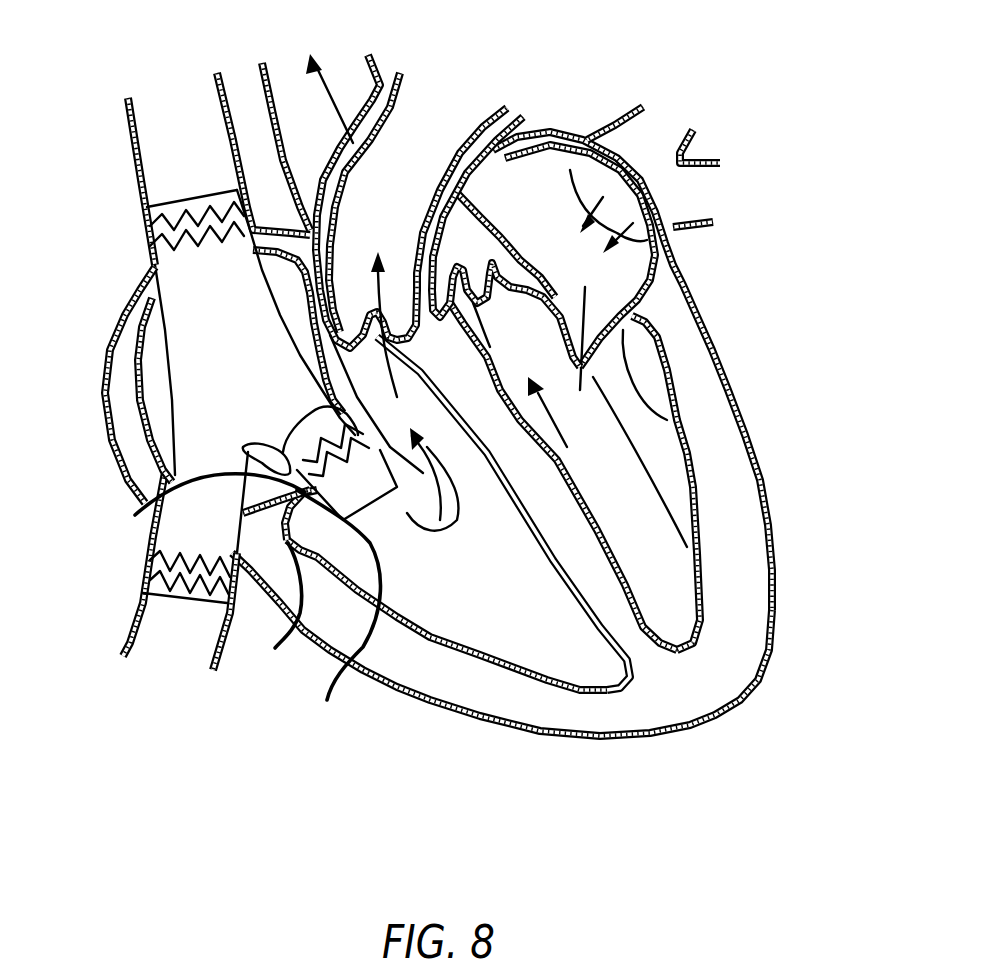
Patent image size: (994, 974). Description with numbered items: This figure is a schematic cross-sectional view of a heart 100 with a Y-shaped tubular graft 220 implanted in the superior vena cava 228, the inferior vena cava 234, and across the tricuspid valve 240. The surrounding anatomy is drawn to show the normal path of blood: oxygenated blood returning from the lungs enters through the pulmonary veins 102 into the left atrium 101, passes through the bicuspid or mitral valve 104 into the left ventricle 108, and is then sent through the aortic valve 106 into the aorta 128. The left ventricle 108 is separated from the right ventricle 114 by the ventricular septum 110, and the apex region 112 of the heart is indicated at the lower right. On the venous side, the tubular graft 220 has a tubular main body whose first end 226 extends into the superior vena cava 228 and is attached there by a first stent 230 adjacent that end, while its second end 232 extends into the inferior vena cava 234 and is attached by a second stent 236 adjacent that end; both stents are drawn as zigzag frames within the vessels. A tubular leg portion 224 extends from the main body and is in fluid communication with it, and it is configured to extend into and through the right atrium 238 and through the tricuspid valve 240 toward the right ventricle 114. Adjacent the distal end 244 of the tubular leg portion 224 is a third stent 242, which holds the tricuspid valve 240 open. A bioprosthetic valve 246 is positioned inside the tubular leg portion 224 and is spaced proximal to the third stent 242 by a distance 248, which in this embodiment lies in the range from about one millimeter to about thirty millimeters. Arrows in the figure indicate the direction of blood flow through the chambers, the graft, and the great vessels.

The heart 100 is at (431, 402).
The left atrium 101 is at (523, 163).
The pulmonary veins 102 is at (630, 160).
The bicuspid or mitral valve 104 is at (587, 292).
The aortic valve 106 is at (470, 300).
The left ventricle 108 is at (673, 460).
The ventricular septum 110 is at (602, 583).
The apex of heart 112 is at (713, 655).
The right ventricle 114 is at (560, 640).
The aorta 128 is at (287, 110).
The tubular graft 220 is at (153, 333).
The tubular leg portion 224 is at (275, 648).
The first end 226 is at (206, 298).
The superior vena cava 228 is at (137, 143).
The first stent 230 is at (150, 219).
The second end 232 is at (157, 561).
The inferior vena cava 234 is at (132, 632).
The second stent 236 is at (157, 577).
The right atrium 238 is at (143, 405).
The tricuspid valve 240 is at (157, 497).
The third stent 242 is at (370, 470).
The distal end 244 is at (327, 700).
The bioprosthetic valve 246 is at (303, 437).
The distance 248 is at (290, 460).